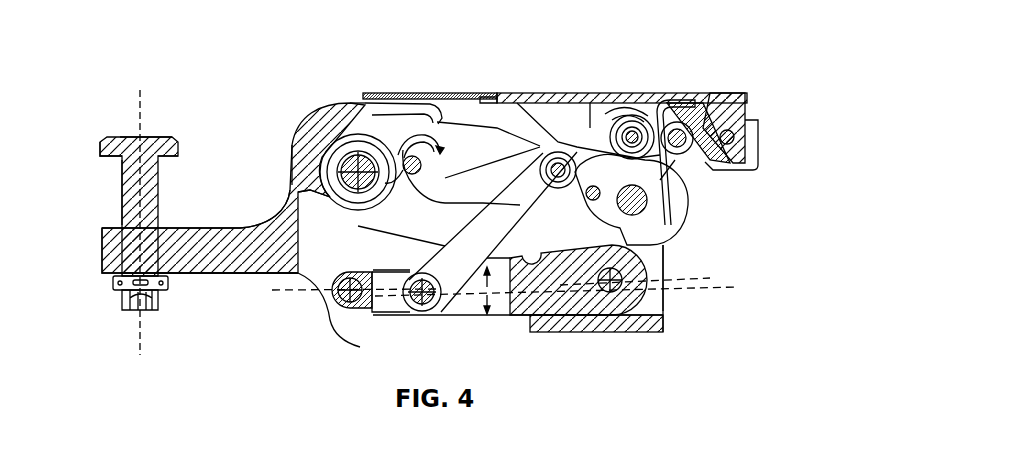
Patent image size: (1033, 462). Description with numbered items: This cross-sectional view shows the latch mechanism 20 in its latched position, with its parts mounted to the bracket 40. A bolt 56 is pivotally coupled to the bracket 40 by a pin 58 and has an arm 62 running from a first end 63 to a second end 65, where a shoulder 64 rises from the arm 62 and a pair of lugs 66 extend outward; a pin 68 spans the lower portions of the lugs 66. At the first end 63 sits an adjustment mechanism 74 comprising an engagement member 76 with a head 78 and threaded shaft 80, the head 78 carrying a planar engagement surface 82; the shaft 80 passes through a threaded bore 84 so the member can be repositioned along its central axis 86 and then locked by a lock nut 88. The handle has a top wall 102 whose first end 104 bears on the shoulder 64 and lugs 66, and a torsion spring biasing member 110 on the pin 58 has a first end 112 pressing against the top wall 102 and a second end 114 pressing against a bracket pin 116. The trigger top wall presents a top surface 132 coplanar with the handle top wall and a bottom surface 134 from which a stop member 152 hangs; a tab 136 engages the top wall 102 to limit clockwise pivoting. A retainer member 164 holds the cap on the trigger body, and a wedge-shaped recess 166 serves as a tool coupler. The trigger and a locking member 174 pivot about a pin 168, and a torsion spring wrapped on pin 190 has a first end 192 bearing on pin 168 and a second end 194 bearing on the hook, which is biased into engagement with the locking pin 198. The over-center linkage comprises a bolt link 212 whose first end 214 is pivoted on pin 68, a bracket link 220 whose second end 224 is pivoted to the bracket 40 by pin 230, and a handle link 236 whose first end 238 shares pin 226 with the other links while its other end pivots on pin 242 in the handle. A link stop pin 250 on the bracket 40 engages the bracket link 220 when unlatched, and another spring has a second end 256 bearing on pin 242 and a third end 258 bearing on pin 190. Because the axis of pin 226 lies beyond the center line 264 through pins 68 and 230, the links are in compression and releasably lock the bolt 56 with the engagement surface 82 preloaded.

The latch mechanism 20 is at (150, 42).
The bracket 40 is at (668, 309).
The bolt 56 is at (292, 144).
The pin 58 is at (356, 160).
The arm 62 is at (222, 275).
The first end 63 is at (101, 238).
The shoulder 64 is at (291, 165).
The second end 65 is at (258, 226).
The lugs 66 is at (347, 322).
The pin 68 is at (346, 316).
The adjustment mechanism 74 is at (110, 130).
The engagement member 76 is at (160, 172).
The head 78 is at (100, 150).
The threaded shaft 80 is at (122, 195).
The engagement surface 82 is at (150, 137).
The threaded bore 84 is at (113, 280).
The central axis 86 is at (137, 100).
The lock nut 88 is at (122, 298).
The top wall 102 is at (395, 92).
The first end 104 is at (373, 100).
The resilient biasing member 110 is at (330, 198).
The first end 112 is at (430, 103).
The second end 114 is at (422, 157).
The pin 116 is at (455, 200).
The top surface 132 is at (537, 92).
The bottom surface 134 is at (446, 140).
The tab 136 is at (493, 118).
The stop member 152 is at (573, 107).
The retainer member 164 is at (735, 142).
The recess 166 is at (723, 97).
The pin 168 is at (633, 137).
The locking member 174 is at (670, 242).
The pin 190 is at (688, 160).
The first end 192 is at (612, 108).
The second end 194 is at (670, 220).
The locking pin 198 is at (655, 208).
The bolt link 212 is at (386, 314).
The first end 214 is at (317, 296).
The bracket link 220 is at (496, 318).
The second end 224 is at (648, 318).
The pin 226 is at (446, 314).
The pin 230 is at (600, 300).
The handle link 236 is at (480, 233).
The first end 238 is at (372, 258).
The pin 242 is at (522, 215).
The link stop pin 250 is at (593, 202).
The second end 256 is at (500, 108).
The third end 258 is at (688, 115).
The center line 264 is at (665, 285).